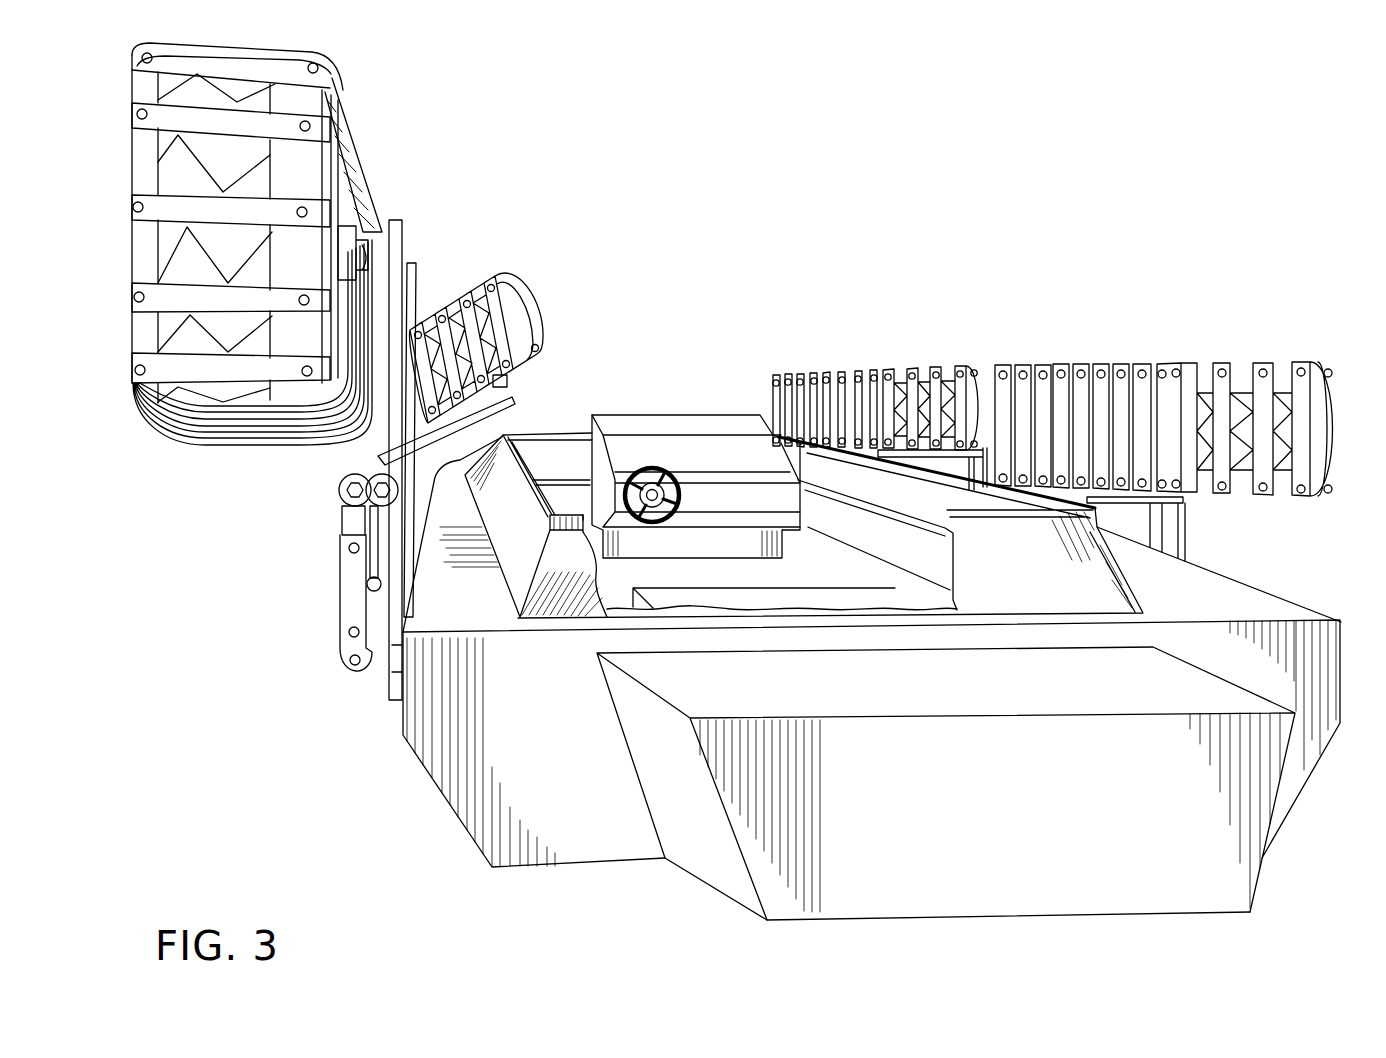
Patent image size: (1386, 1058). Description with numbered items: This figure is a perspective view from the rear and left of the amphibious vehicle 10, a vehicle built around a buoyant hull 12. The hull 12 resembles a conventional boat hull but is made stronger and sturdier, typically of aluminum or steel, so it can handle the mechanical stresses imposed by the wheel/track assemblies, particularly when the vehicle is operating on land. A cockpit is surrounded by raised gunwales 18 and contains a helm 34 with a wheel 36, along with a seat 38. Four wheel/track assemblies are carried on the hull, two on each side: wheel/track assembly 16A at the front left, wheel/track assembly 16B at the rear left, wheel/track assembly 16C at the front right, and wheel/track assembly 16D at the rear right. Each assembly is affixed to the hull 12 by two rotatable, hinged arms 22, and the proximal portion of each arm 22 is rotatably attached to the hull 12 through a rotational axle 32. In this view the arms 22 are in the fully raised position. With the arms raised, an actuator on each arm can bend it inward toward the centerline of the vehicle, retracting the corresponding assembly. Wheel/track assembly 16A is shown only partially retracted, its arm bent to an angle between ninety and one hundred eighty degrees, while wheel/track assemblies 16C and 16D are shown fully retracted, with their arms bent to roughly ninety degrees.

The amphibious vehicle 10 is at (1222, 122).
The buoyant hull 12 is at (622, 838).
The wheel/track assembly 16A is at (523, 312).
The wheel/track assembly 16B is at (297, 172).
The wheel/track assembly 16C is at (918, 372).
The wheel/track assembly 16D is at (1115, 392).
The raised gunwales 18 is at (541, 437).
The hinged arm 22 is at (373, 690).
The rotational axle 32 is at (397, 660).
The helm 34 is at (647, 420).
The wheel 36 is at (676, 472).
The seat 38 is at (770, 602).